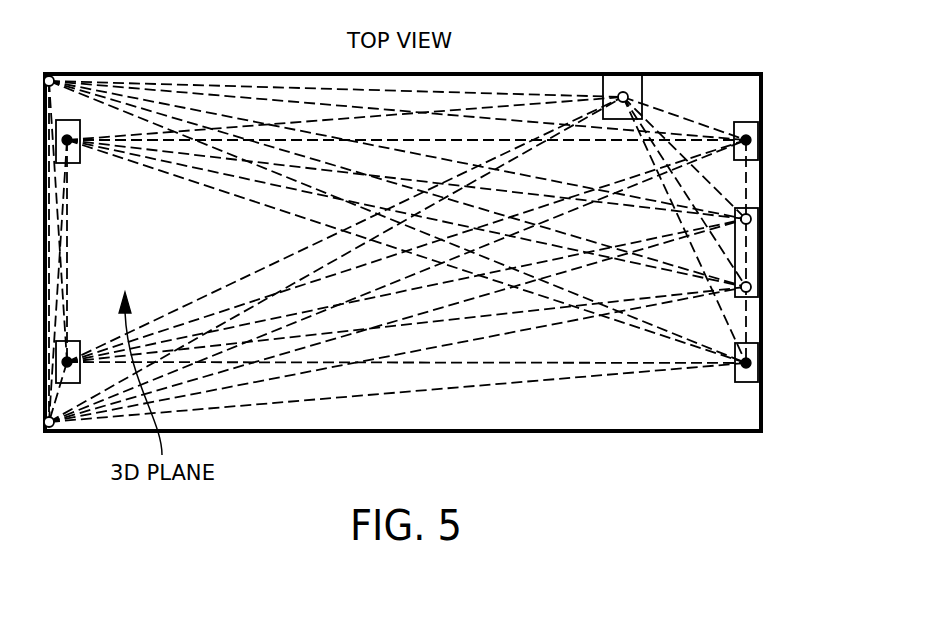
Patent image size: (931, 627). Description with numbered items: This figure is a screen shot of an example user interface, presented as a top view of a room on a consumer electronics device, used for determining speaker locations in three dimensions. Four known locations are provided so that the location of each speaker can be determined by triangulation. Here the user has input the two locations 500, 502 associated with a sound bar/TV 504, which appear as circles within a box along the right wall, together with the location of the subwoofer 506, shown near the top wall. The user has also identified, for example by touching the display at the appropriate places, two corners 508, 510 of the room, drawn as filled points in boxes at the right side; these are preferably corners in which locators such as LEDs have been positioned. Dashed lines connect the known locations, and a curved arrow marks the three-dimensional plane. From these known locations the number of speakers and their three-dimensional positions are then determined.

The location 500 is at (752, 219).
The location 502 is at (752, 287).
The sound bar/TV 504 is at (760, 248).
The subwoofer 506 is at (622, 91).
The corner 508 is at (752, 363).
The corner 510 is at (752, 140).